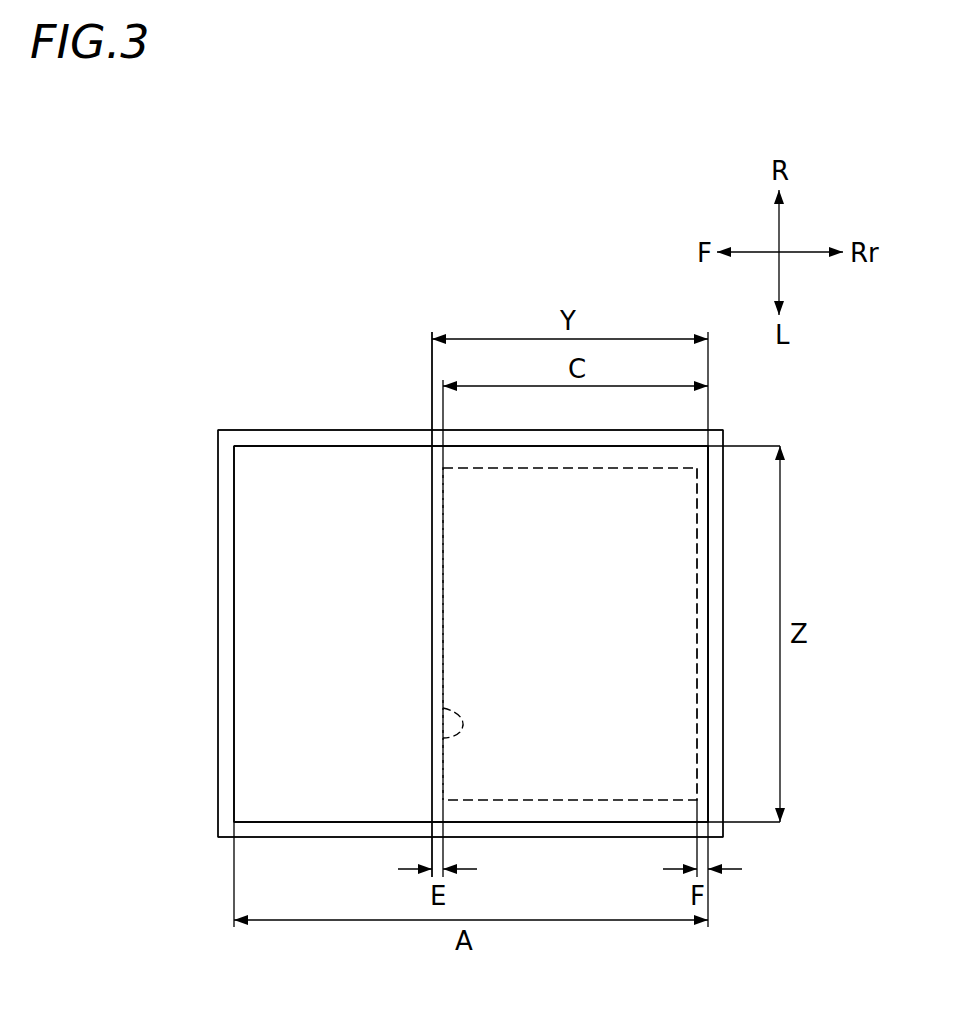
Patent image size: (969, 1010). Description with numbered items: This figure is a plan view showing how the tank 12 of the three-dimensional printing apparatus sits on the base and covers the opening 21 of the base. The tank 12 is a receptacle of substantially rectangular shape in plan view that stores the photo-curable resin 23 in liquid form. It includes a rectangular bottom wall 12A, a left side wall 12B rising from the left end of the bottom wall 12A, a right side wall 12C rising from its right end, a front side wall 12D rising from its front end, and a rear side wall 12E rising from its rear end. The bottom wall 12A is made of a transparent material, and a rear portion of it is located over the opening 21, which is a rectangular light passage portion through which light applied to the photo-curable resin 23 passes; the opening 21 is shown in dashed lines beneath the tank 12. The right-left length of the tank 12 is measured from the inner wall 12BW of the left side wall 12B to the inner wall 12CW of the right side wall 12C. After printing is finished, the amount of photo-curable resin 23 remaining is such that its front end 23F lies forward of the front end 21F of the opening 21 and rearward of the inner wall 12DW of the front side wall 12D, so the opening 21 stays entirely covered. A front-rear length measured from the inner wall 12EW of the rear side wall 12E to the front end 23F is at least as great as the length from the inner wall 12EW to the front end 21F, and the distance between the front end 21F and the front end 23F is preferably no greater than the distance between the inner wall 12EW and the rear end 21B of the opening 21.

The tank 12 is at (239, 430).
The bottom wall 12A is at (270, 633).
The right side wall 12C is at (382, 438).
The inner wall of the right side wall 12CW is at (303, 447).
The front side wall 12D is at (226, 484).
The inner wall of the front side wall 12DW is at (234, 526).
The rear side wall 12E is at (718, 511).
The inner wall of the rear side wall 12EW is at (708, 697).
The left side wall 12B is at (257, 832).
The inner wall of the left side wall 12BW is at (632, 822).
The opening 21 is at (520, 800).
The rear end of the opening 21B is at (697, 606).
The front end of the opening 21F is at (443, 740).
The photo-curable resin 23 is at (665, 752).
The front end of the photo-curable resin 23F is at (432, 655).